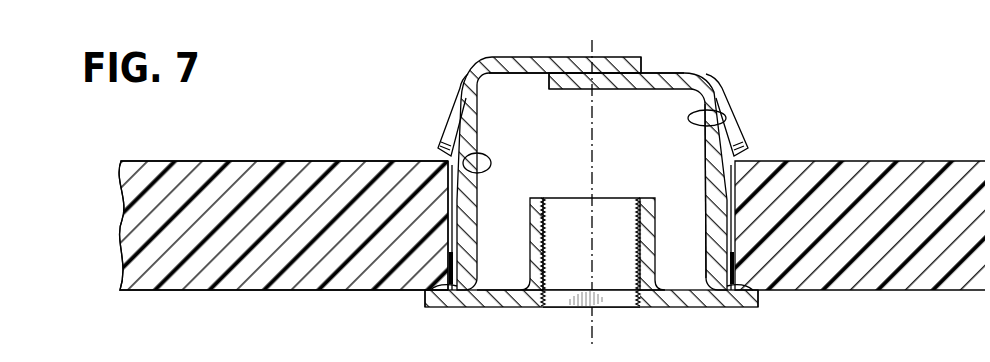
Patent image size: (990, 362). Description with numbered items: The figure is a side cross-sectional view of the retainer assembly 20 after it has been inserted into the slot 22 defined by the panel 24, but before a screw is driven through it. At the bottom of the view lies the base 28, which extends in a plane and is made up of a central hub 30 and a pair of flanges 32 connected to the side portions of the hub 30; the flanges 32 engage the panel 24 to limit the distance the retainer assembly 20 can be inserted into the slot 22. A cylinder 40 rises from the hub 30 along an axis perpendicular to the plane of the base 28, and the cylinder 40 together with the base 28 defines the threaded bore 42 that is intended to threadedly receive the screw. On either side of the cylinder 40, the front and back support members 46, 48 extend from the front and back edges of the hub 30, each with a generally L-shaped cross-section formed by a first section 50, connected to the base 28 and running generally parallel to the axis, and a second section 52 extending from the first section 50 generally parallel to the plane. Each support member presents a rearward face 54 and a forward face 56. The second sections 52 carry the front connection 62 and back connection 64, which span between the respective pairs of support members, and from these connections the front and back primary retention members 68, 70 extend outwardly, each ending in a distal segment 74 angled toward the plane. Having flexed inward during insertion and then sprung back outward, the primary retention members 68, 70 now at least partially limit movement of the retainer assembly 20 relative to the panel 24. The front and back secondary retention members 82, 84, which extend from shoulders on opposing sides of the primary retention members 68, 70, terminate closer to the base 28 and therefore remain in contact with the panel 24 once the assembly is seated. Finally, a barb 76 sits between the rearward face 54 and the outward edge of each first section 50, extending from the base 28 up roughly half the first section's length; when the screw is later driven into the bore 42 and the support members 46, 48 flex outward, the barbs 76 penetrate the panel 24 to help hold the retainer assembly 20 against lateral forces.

The retainer assembly 20 is at (880, 62).
The slot 22 is at (707, 180).
The panel 24 is at (242, 165).
The base 28 is at (487, 311).
The hub 30 is at (503, 305).
The flanges 32 is at (436, 306).
The cylinder 40 is at (650, 260).
The bore 42 is at (622, 196).
The front support members 46 is at (727, 86).
The back support members 48 is at (459, 68).
The first section 50 is at (451, 170).
The second section 52 is at (497, 57).
The rearward face 54 is at (352, 176).
The forward face 56 is at (465, 160).
The front connection 62 is at (562, 72).
The back connection 64 is at (637, 57).
The front primary retention member 68 is at (753, 144).
The back primary retention member 70 is at (444, 110).
The distal segment 74 is at (441, 145).
The barb 76 is at (445, 289).
The front secondary retention members 82 is at (734, 230).
The back secondary retention members 84 is at (451, 240).